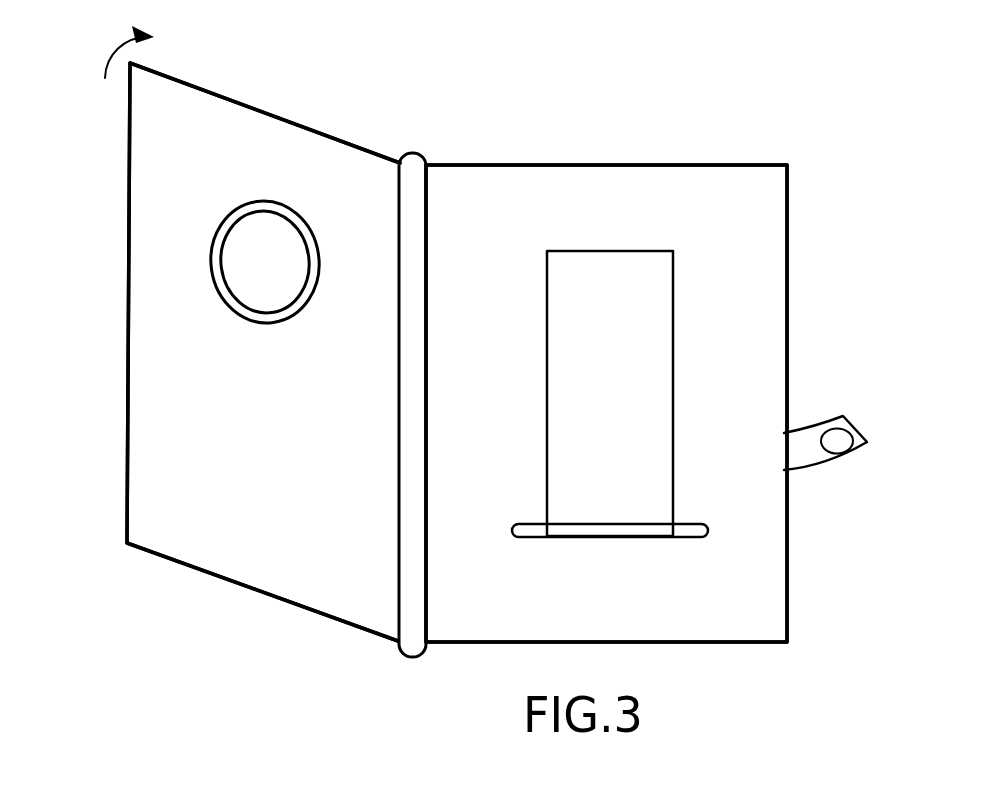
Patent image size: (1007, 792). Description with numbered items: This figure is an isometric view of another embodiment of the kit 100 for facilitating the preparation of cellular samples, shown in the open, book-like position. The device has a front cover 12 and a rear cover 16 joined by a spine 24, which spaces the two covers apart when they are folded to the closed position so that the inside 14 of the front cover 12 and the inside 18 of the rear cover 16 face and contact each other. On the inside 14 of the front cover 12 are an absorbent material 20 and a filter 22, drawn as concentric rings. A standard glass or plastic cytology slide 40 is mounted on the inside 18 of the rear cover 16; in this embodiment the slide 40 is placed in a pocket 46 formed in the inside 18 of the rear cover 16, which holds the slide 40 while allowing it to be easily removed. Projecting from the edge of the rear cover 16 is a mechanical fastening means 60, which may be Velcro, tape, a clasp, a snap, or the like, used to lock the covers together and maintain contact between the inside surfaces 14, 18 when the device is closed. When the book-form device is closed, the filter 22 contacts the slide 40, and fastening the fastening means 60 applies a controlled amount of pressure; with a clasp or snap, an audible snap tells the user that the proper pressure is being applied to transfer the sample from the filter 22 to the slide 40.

The kit 100 is at (794, 134).
The front cover 12 is at (142, 480).
The inside of the front cover 14 is at (328, 567).
The rear cover 16 is at (775, 287).
The inside of the back cover 18 is at (723, 227).
The absorbent material 20 is at (236, 238).
The filter 22 is at (240, 305).
The spine 24 is at (418, 152).
The slide 40 is at (595, 392).
The pocket 46 is at (653, 538).
The fastening means 60 is at (853, 457).